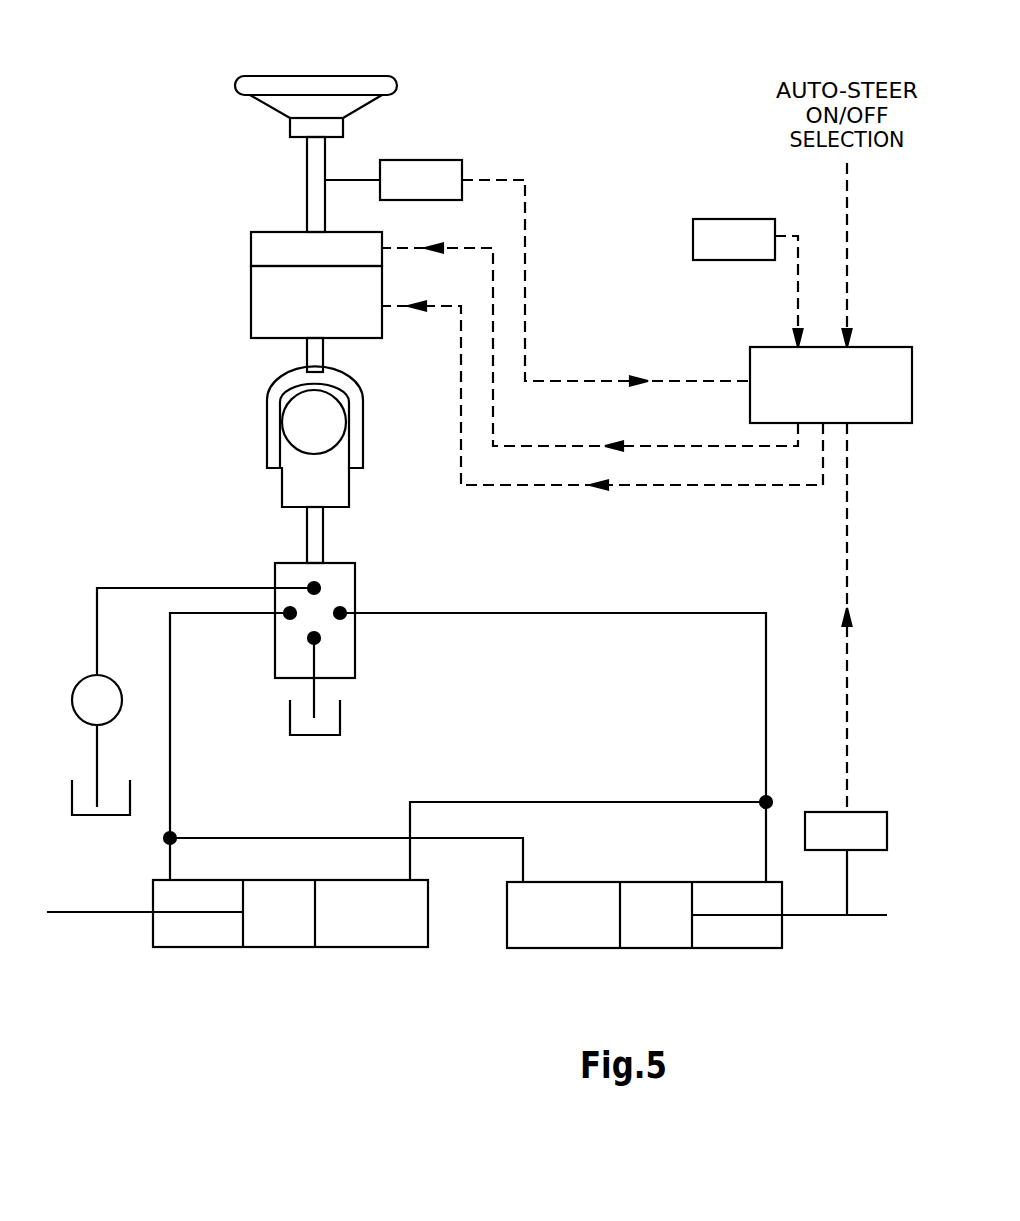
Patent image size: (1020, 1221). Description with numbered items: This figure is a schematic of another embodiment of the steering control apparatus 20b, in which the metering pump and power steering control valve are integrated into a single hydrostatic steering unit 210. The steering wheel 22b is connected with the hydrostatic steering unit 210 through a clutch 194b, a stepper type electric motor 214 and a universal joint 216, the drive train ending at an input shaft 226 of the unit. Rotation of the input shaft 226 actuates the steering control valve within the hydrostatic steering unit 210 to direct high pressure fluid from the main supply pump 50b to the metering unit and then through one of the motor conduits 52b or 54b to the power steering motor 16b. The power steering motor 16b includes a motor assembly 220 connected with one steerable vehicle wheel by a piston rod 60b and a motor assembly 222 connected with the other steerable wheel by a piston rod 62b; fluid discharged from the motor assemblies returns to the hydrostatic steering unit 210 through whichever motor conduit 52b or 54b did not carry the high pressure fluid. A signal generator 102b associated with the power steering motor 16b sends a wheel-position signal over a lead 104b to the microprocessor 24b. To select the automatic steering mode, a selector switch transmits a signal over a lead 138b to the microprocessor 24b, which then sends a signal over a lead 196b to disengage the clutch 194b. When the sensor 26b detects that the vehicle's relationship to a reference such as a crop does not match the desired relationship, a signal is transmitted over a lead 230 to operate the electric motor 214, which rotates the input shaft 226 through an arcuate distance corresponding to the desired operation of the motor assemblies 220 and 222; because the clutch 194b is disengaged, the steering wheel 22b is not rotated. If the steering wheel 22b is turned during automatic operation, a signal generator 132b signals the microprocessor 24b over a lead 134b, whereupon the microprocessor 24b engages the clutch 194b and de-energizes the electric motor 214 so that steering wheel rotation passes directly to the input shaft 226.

The steering wheel 22b is at (323, 87).
The steering control apparatus 20b is at (192, 160).
The signal generator 132b is at (418, 173).
The clutch 194b is at (267, 248).
The stepper type electric motor 214 is at (272, 318).
The universal joint 216 is at (307, 482).
The input shaft 226 is at (317, 533).
The hydrostatic steering unit 210 is at (256, 664).
The main supply pump 50b is at (82, 695).
The motor conduit 52b is at (170, 787).
The motor conduit 54b is at (766, 755).
The power steering motor 16b is at (467, 954).
The motor assembly 220 is at (291, 969).
The motor assembly 222 is at (646, 964).
The piston rod 60b is at (110, 912).
The piston rod 62b is at (813, 917).
The signal generator 102b is at (870, 820).
The lead 104b is at (851, 500).
The microprocessor 24b is at (888, 362).
The sensor 26b is at (745, 237).
The lead 138b is at (851, 262).
The lead 134b is at (547, 380).
The lead 196b is at (527, 446).
The lead 230 is at (497, 486).